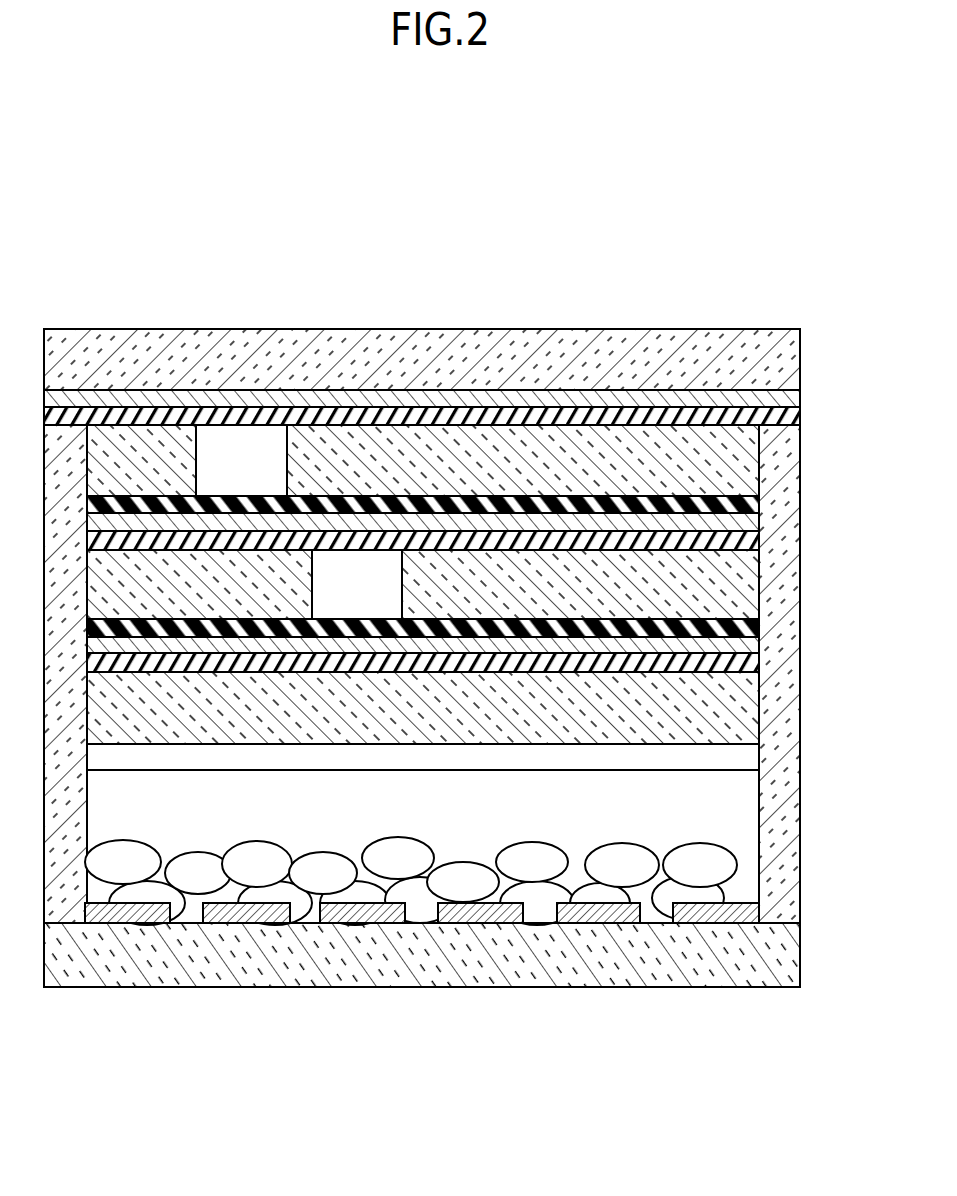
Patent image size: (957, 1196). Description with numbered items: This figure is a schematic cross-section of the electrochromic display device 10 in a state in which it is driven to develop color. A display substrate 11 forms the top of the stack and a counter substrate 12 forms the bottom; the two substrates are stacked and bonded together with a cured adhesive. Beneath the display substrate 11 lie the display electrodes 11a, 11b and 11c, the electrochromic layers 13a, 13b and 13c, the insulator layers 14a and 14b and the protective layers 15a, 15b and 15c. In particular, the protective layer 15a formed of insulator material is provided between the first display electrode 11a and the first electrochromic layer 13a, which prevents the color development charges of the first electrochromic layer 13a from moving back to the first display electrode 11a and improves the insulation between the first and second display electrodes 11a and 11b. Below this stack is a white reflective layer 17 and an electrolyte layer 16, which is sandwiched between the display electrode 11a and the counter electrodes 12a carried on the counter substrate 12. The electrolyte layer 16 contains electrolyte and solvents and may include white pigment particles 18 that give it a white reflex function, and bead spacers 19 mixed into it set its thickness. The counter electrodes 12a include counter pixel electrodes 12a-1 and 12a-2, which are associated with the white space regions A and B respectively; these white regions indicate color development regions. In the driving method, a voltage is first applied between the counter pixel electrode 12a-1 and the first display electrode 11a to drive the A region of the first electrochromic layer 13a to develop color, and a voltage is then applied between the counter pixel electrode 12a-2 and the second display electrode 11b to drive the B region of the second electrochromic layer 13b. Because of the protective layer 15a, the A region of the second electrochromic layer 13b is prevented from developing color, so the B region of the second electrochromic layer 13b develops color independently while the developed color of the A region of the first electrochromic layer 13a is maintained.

The electrochromic display device 10 is at (817, 240).
The display substrate 11 is at (783, 356).
The first display electrode 11a is at (780, 403).
The second display electrode 11b is at (740, 522).
The third display electrode 11c is at (740, 647).
The counter substrate 12 is at (780, 957).
The counter electrodes 12a is at (485, 974).
The counter pixel electrode 12a-1 is at (245, 915).
The counter pixel electrode 12a-2 is at (362, 915).
The first electrochromic layer 13a is at (487, 382).
The second electrochromic layer 13b is at (487, 444).
The third electrochromic layer 13c is at (740, 708).
The insulator layer 14a is at (745, 510).
The insulator layer 14b is at (740, 632).
The protective layer 15a is at (785, 418).
The protective layer 15b is at (740, 540).
The protective layer 15c is at (740, 665).
The electrolyte layer 16 is at (738, 817).
The white reflective layer 17 is at (738, 760).
The white pigment particles 18 is at (485, 941).
The bead spacers 19 is at (780, 849).
The white space region A is at (241, 440).
The white space region B is at (356, 568).